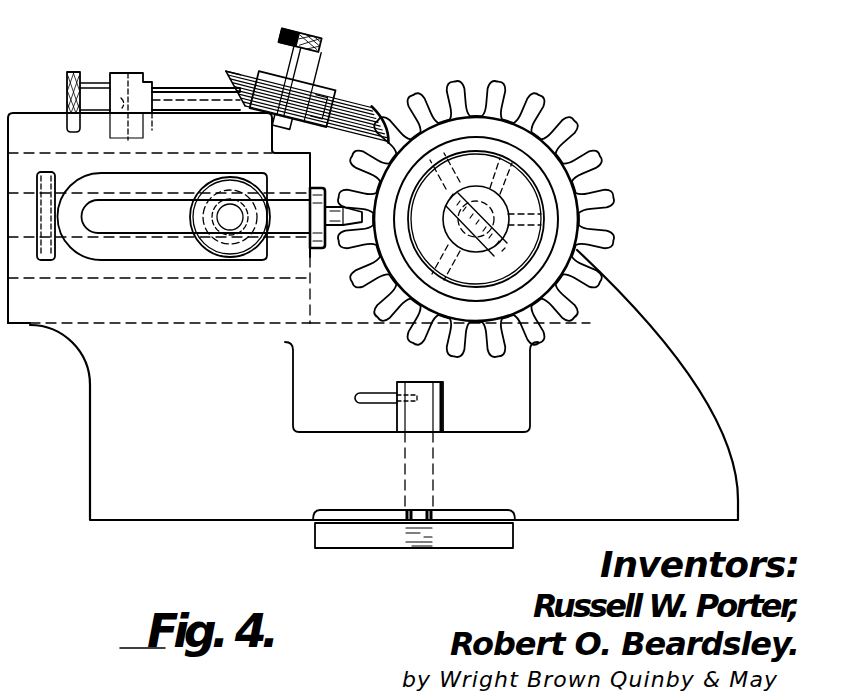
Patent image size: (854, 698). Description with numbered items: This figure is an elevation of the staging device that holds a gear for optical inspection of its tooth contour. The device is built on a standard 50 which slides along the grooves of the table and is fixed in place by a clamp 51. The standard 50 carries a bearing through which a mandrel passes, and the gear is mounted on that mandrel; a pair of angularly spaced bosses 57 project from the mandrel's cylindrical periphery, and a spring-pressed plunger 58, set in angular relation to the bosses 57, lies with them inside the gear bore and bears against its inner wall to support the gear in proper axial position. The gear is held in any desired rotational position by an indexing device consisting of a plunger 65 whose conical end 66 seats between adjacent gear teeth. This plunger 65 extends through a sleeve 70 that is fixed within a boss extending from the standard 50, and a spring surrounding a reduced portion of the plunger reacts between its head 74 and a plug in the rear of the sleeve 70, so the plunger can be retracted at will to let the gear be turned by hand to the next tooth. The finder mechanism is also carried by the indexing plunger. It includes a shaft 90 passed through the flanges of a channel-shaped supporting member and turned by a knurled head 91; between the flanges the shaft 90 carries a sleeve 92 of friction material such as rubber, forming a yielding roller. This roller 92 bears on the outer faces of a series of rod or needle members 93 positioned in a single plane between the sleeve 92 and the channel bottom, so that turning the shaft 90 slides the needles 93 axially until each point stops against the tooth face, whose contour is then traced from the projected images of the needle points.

The standard 50 is at (373, 399).
The clamp 51 is at (400, 384).
The angularly spaced bosses 57 is at (485, 165).
The plunger 58 is at (527, 270).
The plunger 65 is at (327, 193).
The conical end 66 is at (354, 240).
The sleeve 70 is at (313, 188).
The head 74 is at (337, 250).
The shaft 90 is at (314, 73).
The knurled head 91 is at (324, 48).
The sleeve of friction material 92 is at (350, 89).
The needle members 93 is at (236, 72).